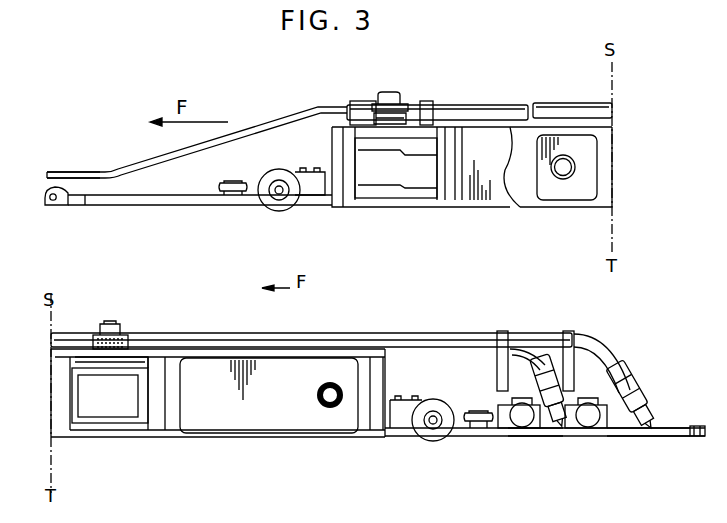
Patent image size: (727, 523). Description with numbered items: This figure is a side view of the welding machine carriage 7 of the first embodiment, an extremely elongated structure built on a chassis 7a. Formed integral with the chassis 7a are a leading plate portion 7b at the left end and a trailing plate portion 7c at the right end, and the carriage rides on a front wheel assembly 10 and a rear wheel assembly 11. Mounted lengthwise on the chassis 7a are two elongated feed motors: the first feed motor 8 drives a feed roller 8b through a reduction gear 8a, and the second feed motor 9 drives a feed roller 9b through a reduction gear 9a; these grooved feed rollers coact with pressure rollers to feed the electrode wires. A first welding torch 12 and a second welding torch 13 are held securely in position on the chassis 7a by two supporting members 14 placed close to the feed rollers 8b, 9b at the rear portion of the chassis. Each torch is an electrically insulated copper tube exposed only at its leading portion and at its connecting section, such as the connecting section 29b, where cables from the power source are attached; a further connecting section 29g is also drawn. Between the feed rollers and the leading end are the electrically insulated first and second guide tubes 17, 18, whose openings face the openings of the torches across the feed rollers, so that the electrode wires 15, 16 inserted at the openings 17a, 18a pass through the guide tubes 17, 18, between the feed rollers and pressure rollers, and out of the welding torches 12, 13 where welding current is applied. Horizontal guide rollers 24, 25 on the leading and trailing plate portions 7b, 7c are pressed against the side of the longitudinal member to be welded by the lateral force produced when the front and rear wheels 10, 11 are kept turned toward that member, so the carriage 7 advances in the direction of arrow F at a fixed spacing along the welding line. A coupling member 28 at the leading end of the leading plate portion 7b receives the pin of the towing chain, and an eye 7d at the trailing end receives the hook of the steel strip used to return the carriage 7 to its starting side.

The carriage 7 is at (330, 438).
The chassis 7a is at (598, 194).
The leading plate portion 7b is at (140, 205).
The trailing plate portion 7c is at (592, 428).
The eye 7d is at (698, 424).
The first feed motor 8 is at (250, 418).
The reduction gear 8a is at (117, 408).
The feed roller 8b is at (96, 334).
The second feed motor 9 is at (490, 197).
The reduction gear 9a is at (393, 178).
The feed roller 9b is at (376, 105).
The front wheel assembly 10 is at (276, 210).
The rear wheel assembly 11 is at (428, 440).
The first welding torch 12 is at (538, 356).
The second welding torch 13 is at (610, 350).
The supporting members 14 is at (426, 105).
The electrode wire 15 is at (552, 428).
The electrode wire 16 is at (640, 428).
The first guide tube 17 is at (197, 129).
The second guide tube 18 is at (262, 120).
The opening 17a is at (61, 151).
The opening 18a is at (60, 170).
The horizontal guide roller 24 is at (233, 195).
The horizontal guide roller 25 is at (478, 428).
The coupling member 28 is at (53, 205).
The connecting section 29b is at (539, 392).
The nozzle 29g is at (618, 396).